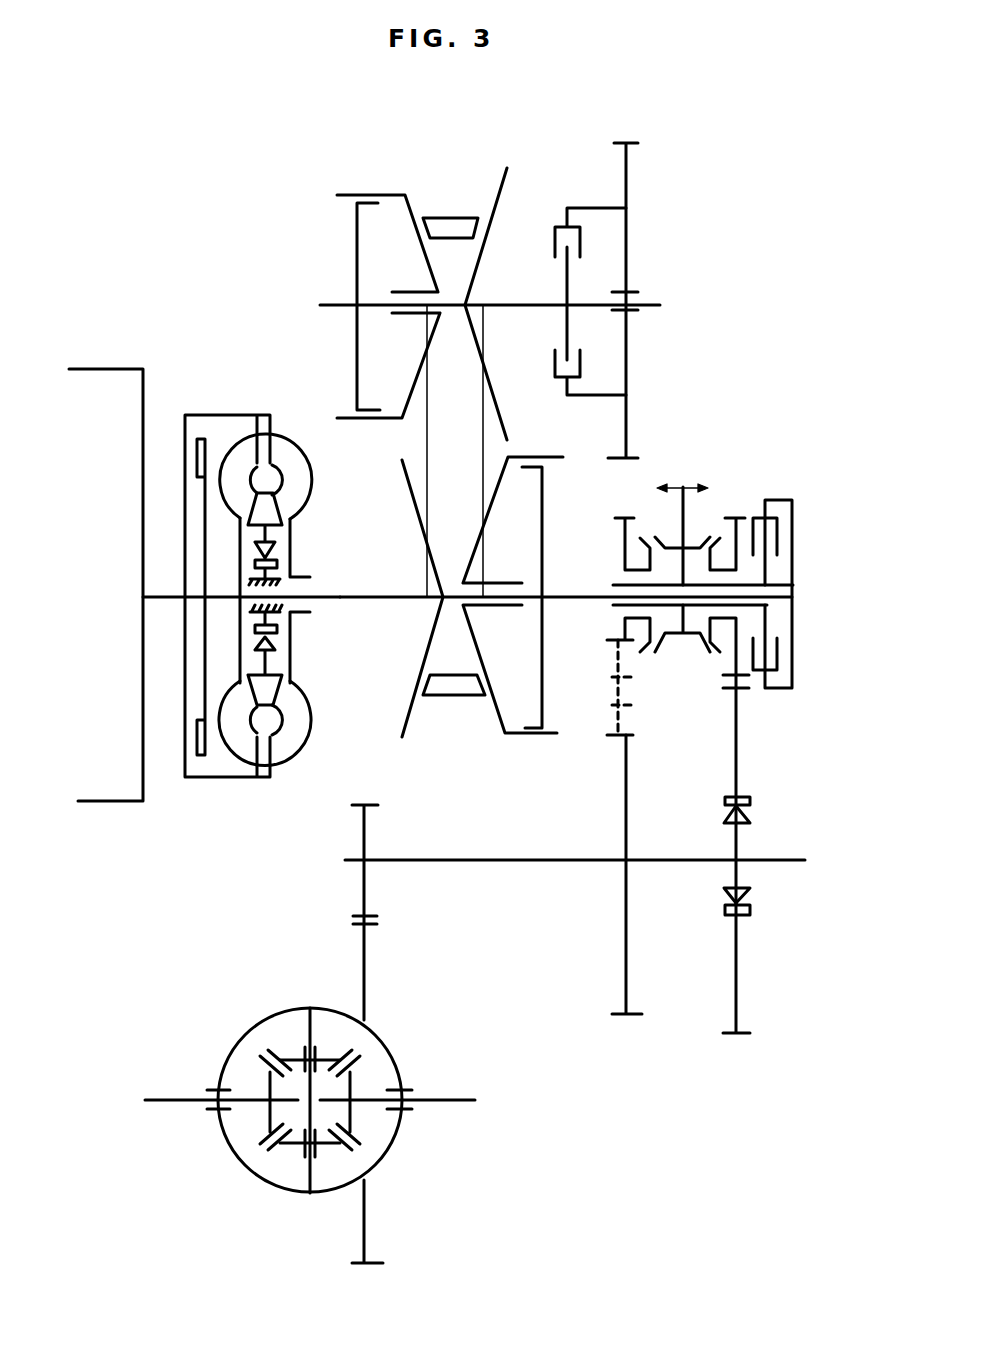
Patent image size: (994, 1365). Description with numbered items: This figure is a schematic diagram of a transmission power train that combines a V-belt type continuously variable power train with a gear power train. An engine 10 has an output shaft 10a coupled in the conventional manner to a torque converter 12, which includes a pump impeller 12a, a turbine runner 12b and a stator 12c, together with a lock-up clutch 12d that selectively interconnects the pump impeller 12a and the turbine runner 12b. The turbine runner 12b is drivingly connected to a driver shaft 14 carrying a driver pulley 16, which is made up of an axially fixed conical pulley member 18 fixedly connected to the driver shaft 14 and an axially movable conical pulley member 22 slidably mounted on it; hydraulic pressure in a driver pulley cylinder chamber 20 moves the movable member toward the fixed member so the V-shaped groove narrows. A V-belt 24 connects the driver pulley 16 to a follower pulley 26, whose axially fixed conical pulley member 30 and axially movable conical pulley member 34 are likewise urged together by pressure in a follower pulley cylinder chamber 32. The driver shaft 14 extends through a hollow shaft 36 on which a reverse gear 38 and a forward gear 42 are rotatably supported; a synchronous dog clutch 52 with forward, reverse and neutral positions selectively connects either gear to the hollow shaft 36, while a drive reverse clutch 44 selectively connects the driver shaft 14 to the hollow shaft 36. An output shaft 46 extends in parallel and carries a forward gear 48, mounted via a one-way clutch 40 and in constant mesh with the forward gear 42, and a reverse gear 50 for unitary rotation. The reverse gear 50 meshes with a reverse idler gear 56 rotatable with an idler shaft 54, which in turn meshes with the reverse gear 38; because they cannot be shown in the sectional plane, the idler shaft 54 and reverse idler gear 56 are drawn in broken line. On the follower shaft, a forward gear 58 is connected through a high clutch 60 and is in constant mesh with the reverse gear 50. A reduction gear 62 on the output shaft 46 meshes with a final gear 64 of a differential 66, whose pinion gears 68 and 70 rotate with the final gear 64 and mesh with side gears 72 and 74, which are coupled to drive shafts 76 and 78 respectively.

The engine 10 is at (110, 382).
The output shaft 10a is at (165, 600).
The torque converter 12 is at (276, 408).
The pump impeller 12a is at (306, 468).
The turbine runner 12b is at (238, 455).
The stator 12c is at (272, 516).
The lock-up clutch 12d is at (195, 445).
The driver shaft 14 is at (392, 595).
The driver pulley 16 is at (459, 712).
The axially fixed conical pulley member 18 is at (412, 728).
The driver pulley cylinder chamber 20 is at (527, 678).
The axially movable conical pulley member 22 is at (504, 735).
The V-belt 24 is at (485, 458).
The follower pulley 26 is at (471, 195).
The axially fixed conical pulley member 30 is at (500, 176).
The follower pulley cylinder chamber 32 is at (368, 252).
The axially movable conical pulley member 34 is at (413, 208).
The hollow shaft 36 is at (617, 583).
The reverse gear 38 is at (620, 516).
The one-way clutch 40 is at (752, 896).
The forward gear 42 is at (742, 517).
The drive reverse clutch 44 is at (783, 511).
The output shaft 46 is at (526, 858).
The forward gear 48 is at (740, 1036).
The reverse gear 50 is at (632, 1017).
The synchronous dog clutch 52 is at (722, 500).
The idler shaft 54 is at (578, 690).
The reverse idler gear 56 is at (615, 738).
The forward gear 58 is at (635, 143).
The high clutch 60 is at (556, 205).
The reduction gear 62 is at (361, 800).
The final gear 64 is at (374, 925).
The differential 66 is at (300, 992).
The pinion gear 68 is at (328, 1056).
The pinion gear 70 is at (332, 1147).
The side gear 72 is at (270, 1120).
The side gear 74 is at (352, 1113).
The drive shaft 76 is at (165, 1097).
The drive shaft 78 is at (450, 1097).